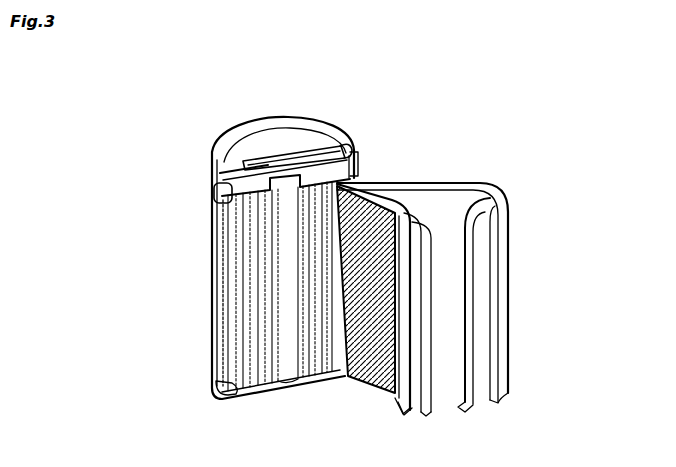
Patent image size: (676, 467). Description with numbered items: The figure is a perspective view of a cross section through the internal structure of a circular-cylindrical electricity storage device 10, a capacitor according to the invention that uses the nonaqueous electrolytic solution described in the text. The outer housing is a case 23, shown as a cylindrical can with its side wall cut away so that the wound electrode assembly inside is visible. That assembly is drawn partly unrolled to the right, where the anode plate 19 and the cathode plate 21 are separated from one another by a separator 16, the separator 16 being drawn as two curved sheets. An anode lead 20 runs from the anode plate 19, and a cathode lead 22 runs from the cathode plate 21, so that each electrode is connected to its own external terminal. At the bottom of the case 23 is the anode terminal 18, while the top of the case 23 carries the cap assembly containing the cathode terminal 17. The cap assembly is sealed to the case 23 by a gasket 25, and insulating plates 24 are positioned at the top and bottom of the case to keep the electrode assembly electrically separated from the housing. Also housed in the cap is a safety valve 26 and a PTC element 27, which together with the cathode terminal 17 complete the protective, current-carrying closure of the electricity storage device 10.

The circular-cylindrical electricity storage device 10 is at (378, 128).
The separator 16 is at (427, 203).
The cathode terminal 17 is at (258, 143).
The anode terminal 18 is at (251, 397).
The anode plate 19 is at (483, 263).
The anode lead 20 is at (476, 343).
The cathode plate 21 is at (405, 403).
The cathode lead 22 is at (357, 168).
The case 23 is at (212, 287).
The insulating plate 24 is at (226, 197).
The gasket 25 is at (222, 152).
The safety valve 26 is at (272, 160).
The PTC element 27 is at (313, 138).